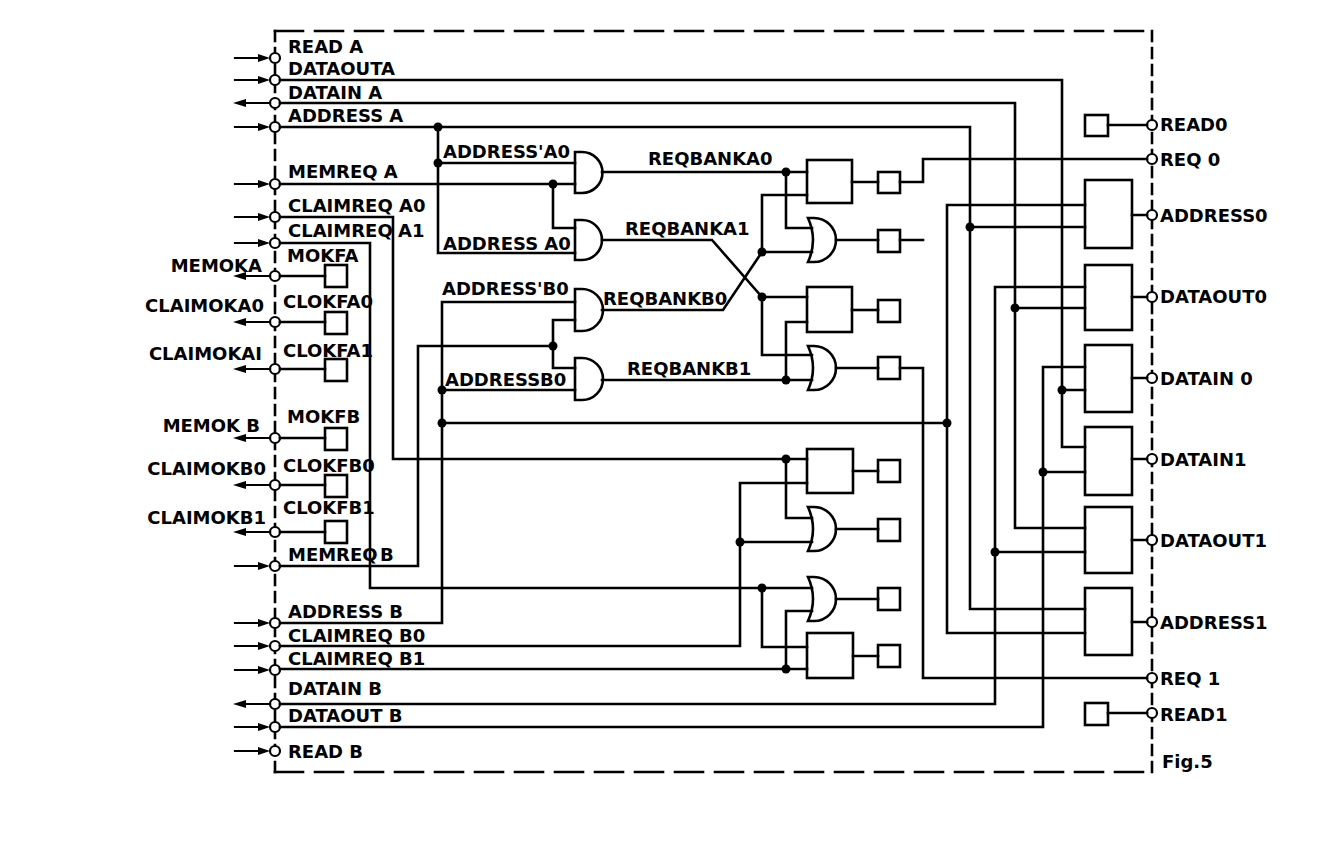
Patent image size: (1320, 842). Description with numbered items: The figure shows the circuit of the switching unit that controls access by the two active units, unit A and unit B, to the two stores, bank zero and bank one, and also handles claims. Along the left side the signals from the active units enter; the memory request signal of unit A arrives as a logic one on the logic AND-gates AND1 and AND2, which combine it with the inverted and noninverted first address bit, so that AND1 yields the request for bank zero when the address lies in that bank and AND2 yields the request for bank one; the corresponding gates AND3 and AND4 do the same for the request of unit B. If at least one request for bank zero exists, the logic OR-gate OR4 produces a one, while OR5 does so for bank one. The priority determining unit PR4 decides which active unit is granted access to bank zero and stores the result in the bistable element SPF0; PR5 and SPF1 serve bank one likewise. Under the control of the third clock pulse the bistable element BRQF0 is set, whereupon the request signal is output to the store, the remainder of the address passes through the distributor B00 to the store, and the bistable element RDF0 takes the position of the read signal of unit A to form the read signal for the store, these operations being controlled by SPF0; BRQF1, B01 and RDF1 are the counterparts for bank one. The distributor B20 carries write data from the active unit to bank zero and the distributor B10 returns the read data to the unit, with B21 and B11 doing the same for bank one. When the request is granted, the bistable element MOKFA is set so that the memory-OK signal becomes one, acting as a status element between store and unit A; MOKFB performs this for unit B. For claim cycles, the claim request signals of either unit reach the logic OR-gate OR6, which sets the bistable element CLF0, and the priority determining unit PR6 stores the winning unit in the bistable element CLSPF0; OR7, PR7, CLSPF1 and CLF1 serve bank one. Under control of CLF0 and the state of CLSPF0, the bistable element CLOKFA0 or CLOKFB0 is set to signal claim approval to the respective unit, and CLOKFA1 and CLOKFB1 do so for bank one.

The logic AND-gate AND1 is at (597, 150).
The logic AND-gate AND2 is at (597, 221).
The logic AND-gate AND3 is at (590, 294).
The logic AND-gate AND4 is at (597, 358).
The logic OR-gate OR4 is at (821, 256).
The logic OR-gate OR5 is at (821, 384).
The logic OR-gate OR6 is at (828, 508).
The logic OR-gate OR7 is at (838, 576).
The priority determining unit PR4 is at (829, 181).
The priority determining unit PR5 is at (829, 309).
The priority determining unit PR6 is at (830, 471).
The priority determining unit PR7 is at (830, 655).
The bistable element SPF0 is at (891, 165).
The bistable element SPF1 is at (887, 301).
The bistable element BRQF0 is at (886, 231).
The bistable element BRQF1 is at (896, 357).
The bistable element CLSPF0 is at (891, 452).
The bistable element CLSPF1 is at (890, 667).
The bistable element CLF0 is at (898, 519).
The bistable element CLF1 is at (893, 588).
The bistable element RDF0 is at (1096, 115).
The bistable element RDF1 is at (1095, 727).
The bistable element MOKFA is at (336, 276).
The bistable element CLOKFA0 is at (336, 323).
The bistable element CLOKFA1 is at (336, 370).
The bistable element MOKFB is at (336, 439).
The bistable element CLOKFB0 is at (336, 486).
The bistable element CLOKFB1 is at (336, 532).
The distributor B00 is at (1108, 214).
The distributor B10 is at (1108, 297).
The distributor B20 is at (1108, 378).
The distributor B21 is at (1108, 461).
The distributor B11 is at (1108, 540).
The distributor B01 is at (1108, 621).